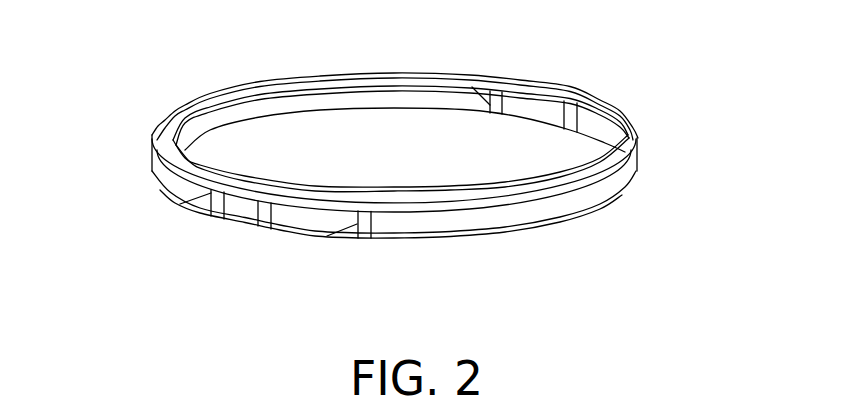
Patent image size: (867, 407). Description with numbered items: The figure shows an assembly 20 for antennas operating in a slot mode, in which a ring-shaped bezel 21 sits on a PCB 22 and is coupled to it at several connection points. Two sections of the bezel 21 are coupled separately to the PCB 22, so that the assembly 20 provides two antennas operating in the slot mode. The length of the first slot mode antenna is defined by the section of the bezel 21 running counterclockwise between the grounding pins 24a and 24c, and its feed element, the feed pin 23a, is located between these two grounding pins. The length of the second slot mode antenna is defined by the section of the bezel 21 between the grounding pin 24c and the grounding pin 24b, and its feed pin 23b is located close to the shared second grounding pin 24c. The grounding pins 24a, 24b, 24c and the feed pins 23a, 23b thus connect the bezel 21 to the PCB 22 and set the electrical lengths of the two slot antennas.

The assembly 20 is at (152, 106).
The bezel 21 is at (635, 128).
The PCB 22 is at (623, 203).
The feed pin 23a is at (332, 236).
The feed pin 23b is at (480, 104).
The grounding pin 24a is at (257, 226).
The grounding pin 24b is at (200, 209).
The grounding pin 24c is at (608, 107).